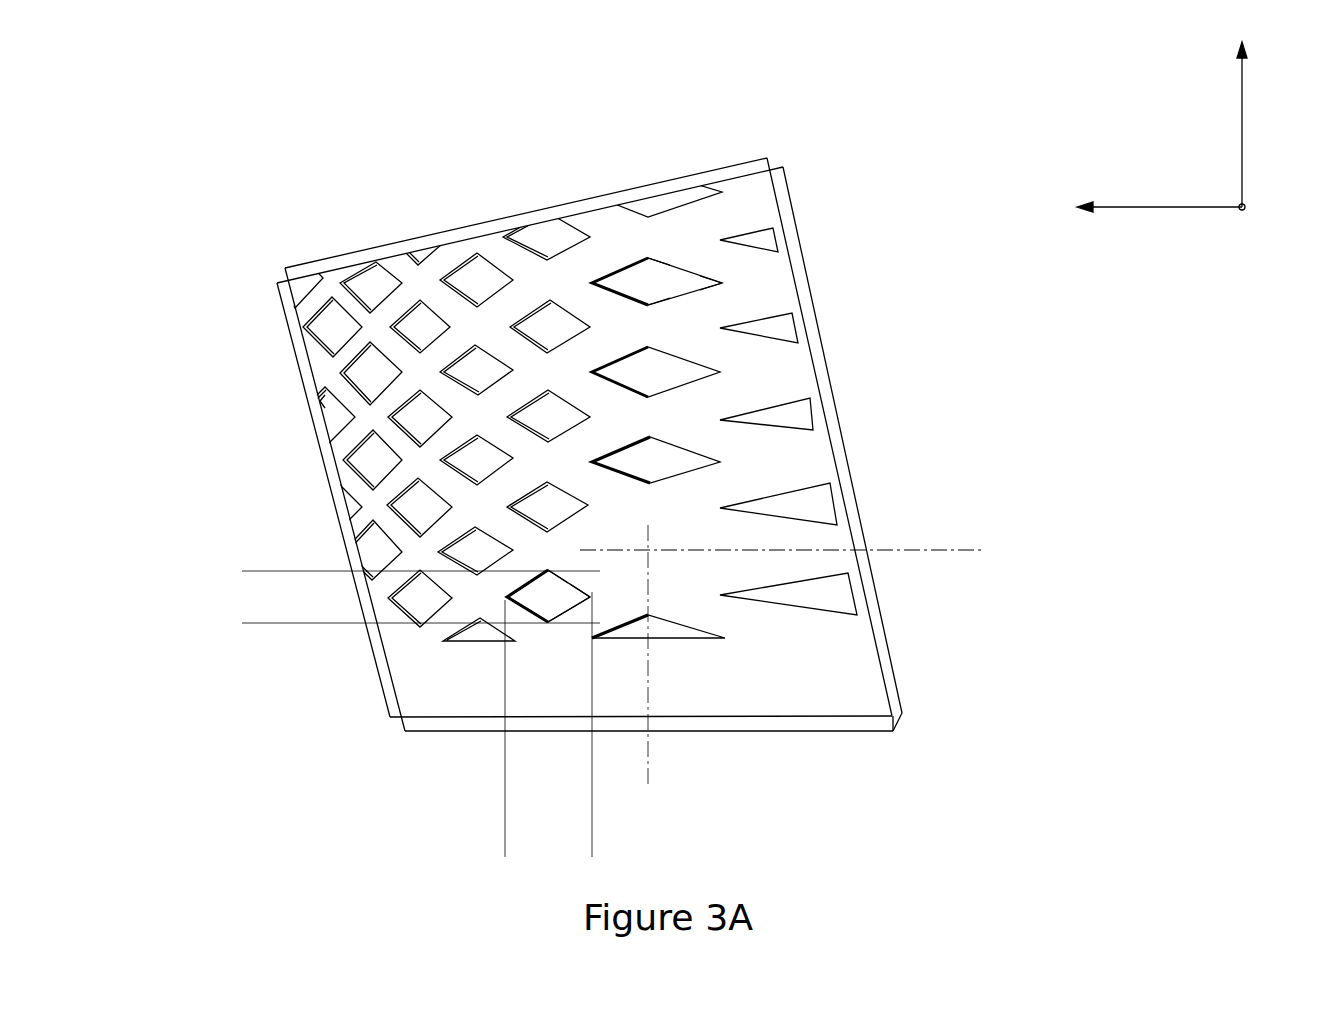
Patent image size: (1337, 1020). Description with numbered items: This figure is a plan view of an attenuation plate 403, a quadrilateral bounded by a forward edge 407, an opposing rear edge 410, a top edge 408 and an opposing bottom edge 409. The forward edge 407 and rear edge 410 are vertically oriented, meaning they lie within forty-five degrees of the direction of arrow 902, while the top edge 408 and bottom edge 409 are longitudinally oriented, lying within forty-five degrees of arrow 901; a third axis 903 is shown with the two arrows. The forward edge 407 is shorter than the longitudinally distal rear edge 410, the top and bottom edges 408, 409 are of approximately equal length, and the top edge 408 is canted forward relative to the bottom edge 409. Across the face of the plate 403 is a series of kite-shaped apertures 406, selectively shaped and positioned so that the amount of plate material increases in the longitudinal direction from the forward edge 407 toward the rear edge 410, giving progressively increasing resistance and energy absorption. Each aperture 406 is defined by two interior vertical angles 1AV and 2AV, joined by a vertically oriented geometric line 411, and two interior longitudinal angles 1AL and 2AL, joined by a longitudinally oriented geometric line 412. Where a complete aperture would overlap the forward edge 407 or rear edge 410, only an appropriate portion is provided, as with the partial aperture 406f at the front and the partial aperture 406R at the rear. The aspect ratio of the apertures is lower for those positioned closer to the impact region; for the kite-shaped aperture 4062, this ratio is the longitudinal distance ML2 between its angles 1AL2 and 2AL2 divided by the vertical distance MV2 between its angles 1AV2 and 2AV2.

The attenuation plate 403 is at (636, 473).
The kite-shaped aperture 406 is at (655, 278).
The forward partial aperture 406f is at (320, 401).
The rear partial aperture 406R is at (835, 598).
The kite-shaped aperture of second column 4062 is at (538, 603).
The forward edge 407 is at (322, 465).
The top edge 408 is at (455, 238).
The bottom edge 409 is at (452, 727).
The rear edge 410 is at (855, 498).
The geometric line joining interior vertical angles 411 is at (655, 744).
The geometric line joining interior longitudinal angles 412 is at (945, 548).
The first interior longitudinal angle 1AL is at (593, 282).
The first interior vertical angle 1AV is at (673, 282).
The second interior longitudinal angle 2AL is at (698, 283).
The second interior vertical angle 2AV is at (648, 300).
The first interior longitudinal angle of aperture 4062 1AL2 is at (507, 597).
The first interior vertical angle of aperture 4062 1AV2 is at (585, 548).
The second interior longitudinal angle of aperture 4062 2AL2 is at (590, 597).
The second interior vertical angle of aperture 4062 2AV2 is at (548, 621).
The vertical distance MV2 is at (260, 518).
The longitudinal distance ML2 is at (625, 841).
The longitudinal direction arrow 901 is at (1138, 209).
The vertical direction arrow 902 is at (1241, 113).
The normal axis 903 is at (1272, 209).